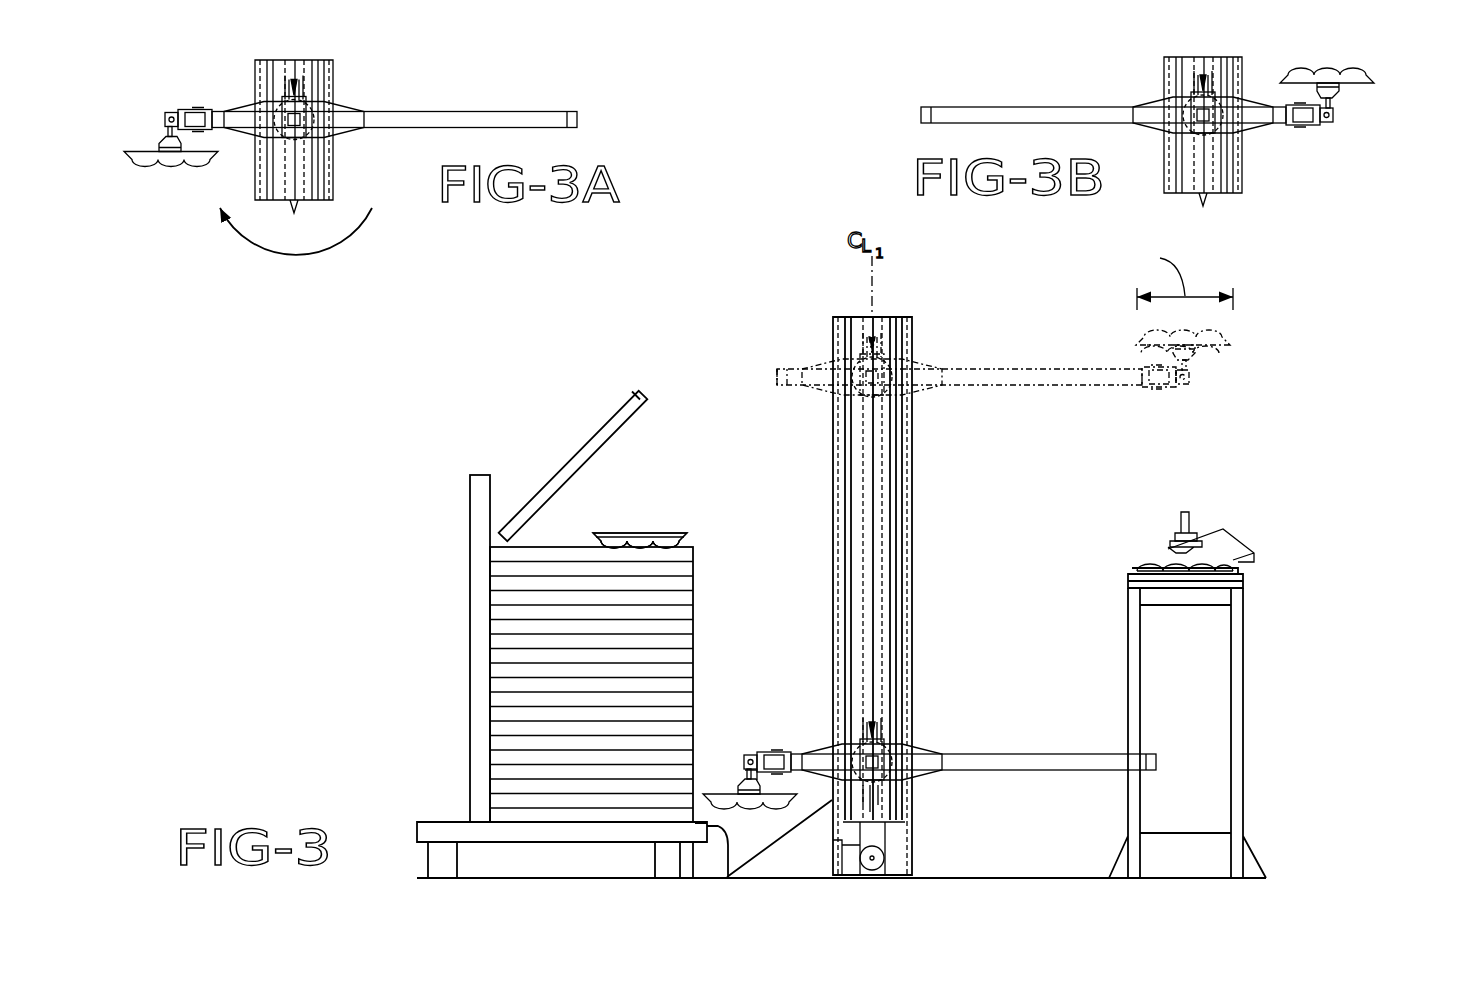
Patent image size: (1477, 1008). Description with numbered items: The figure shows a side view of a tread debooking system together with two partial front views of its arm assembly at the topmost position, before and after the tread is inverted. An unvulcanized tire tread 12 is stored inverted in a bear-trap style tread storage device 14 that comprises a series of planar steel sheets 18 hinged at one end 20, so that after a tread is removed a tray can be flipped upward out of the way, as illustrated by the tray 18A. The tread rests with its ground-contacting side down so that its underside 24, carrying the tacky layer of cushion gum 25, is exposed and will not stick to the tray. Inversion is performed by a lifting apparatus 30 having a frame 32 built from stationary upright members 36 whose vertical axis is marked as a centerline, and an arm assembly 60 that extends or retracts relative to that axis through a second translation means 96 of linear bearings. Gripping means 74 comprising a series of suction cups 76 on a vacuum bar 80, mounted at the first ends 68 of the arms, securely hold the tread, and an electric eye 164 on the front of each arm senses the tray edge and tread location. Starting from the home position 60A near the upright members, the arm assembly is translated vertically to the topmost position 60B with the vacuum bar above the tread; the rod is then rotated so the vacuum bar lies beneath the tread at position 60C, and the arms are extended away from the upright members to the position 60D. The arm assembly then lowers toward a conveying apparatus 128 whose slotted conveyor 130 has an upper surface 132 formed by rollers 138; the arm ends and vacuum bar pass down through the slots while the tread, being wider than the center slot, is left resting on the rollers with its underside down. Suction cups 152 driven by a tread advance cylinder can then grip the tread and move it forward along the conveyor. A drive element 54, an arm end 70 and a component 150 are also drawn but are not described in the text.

In FIG. 3A, the tire tread 12 is at (164, 158).
In FIG. 3B, the tire tread 12 is at (1361, 78).
In FIG. 3, the tire tread 12 is at (668, 533).
In FIG. 3, the tread storage device 14 is at (478, 692).
In FIG. 3, the planar steel sheets 18 is at (690, 612).
In FIG. 3, the tray 18A is at (645, 394).
In FIG. 3, the hinged end 20 is at (490, 598).
In FIG. 3, the underside of the tread 24 is at (613, 533).
In FIG. 3, the cushion gum 25 is at (682, 539).
In FIG. 3, the lifting apparatus 30 is at (928, 567).
In FIG. 3, the frame 32 is at (878, 498).
In FIG. 3A, the upright members 36 is at (297, 64).
In FIG. 3B, the upright members 36 is at (1203, 62).
In FIG. 3, the drive mechanism 54 is at (870, 604).
In FIG. 3, the arm assembly 60 is at (956, 543).
In FIG. 3, the home position of the arm assembly 60A is at (1028, 745).
In FIG. 3A, the topmost position of the arm assembly before inversion 60B is at (406, 99).
In FIG. 3B, the topmost position of the arm assembly after inversion 60C is at (1092, 101).
In FIG. 3, the extended position of the arm assembly 60D is at (1043, 400).
In FIG. 3, the first end of the first arm 68 is at (1181, 391).
In FIG. 3, the arm second end 70 is at (780, 380).
In FIG. 3, the gripping means 74 is at (1246, 289).
In FIG. 3, the suction cups 76 is at (762, 786).
In FIG. 3A, the vacuum bar 80 is at (170, 112).
In FIG. 3B, the vacuum bar 80 is at (1328, 120).
In FIG. 3, the vacuum bar 80 is at (752, 755).
In FIG. 3, the second translation means 96 is at (930, 362).
In FIG. 3, the conveying apparatus 128 is at (1211, 672).
In FIG. 3, the slotted conveyor 130 is at (1128, 663).
In FIG. 3, the upper surface of the slotted conveyor 132 is at (1160, 565).
In FIG. 3, the rollers 138 is at (1140, 570).
In FIG. 3, the clamp actuator 150 is at (1190, 514).
In FIG. 3, the suction cups 152 is at (1170, 546).
In FIG. 3, the electric eye 164 is at (745, 758).